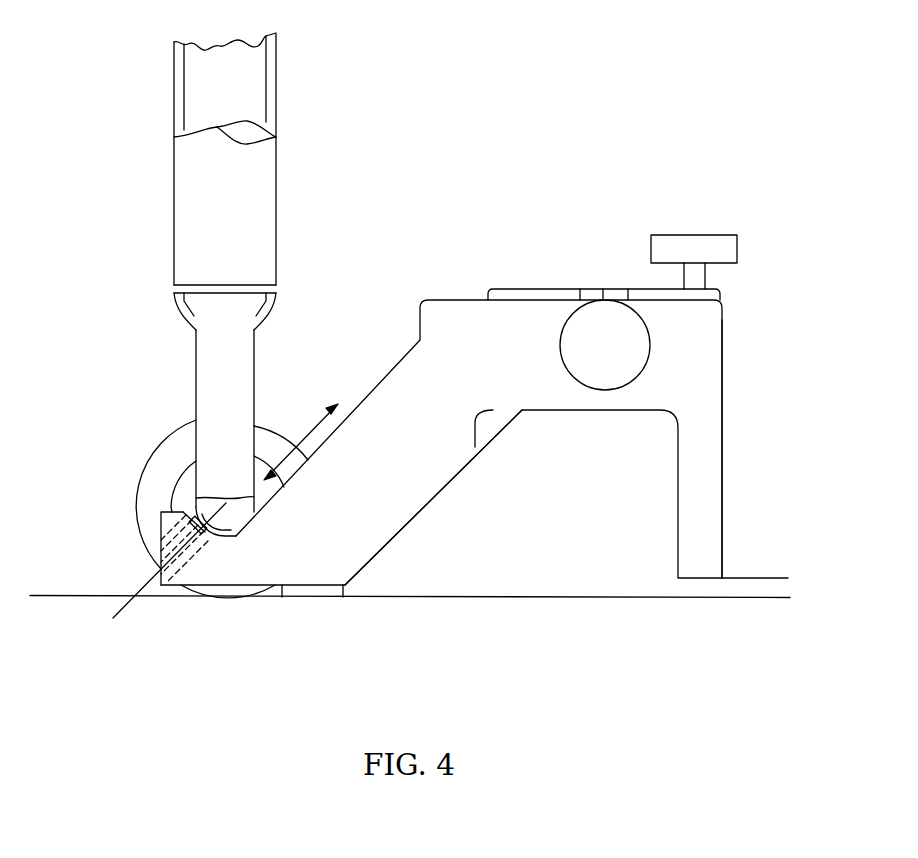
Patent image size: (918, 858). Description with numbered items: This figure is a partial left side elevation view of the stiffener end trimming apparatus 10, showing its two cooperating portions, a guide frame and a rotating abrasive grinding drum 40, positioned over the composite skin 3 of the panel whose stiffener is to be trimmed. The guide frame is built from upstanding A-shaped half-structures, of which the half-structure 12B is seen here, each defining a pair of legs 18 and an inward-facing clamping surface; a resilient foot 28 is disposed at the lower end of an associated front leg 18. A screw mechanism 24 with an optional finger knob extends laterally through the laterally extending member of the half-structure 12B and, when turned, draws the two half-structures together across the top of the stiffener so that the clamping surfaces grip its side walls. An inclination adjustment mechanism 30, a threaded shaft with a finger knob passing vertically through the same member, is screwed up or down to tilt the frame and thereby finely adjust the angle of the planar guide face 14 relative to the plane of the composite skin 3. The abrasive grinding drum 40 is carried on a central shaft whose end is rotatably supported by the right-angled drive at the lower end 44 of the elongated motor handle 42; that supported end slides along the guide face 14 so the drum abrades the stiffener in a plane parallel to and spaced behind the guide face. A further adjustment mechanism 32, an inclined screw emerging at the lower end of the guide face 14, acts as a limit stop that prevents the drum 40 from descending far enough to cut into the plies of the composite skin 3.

The composite skin 3 is at (462, 598).
The apparatus 10 is at (484, 148).
The A-shaped half-structure 12B is at (540, 397).
The guide face 14 is at (376, 387).
The leg 18 is at (400, 508).
The screw mechanism 24 is at (637, 348).
The resilient foot 28 is at (322, 593).
The inclination adjustment mechanism 30 is at (718, 241).
The adjustment mechanism 32 is at (176, 584).
The abrasive grinding drum 40 is at (152, 450).
The motor handle 42 is at (175, 164).
The lower end 44 is at (168, 503).